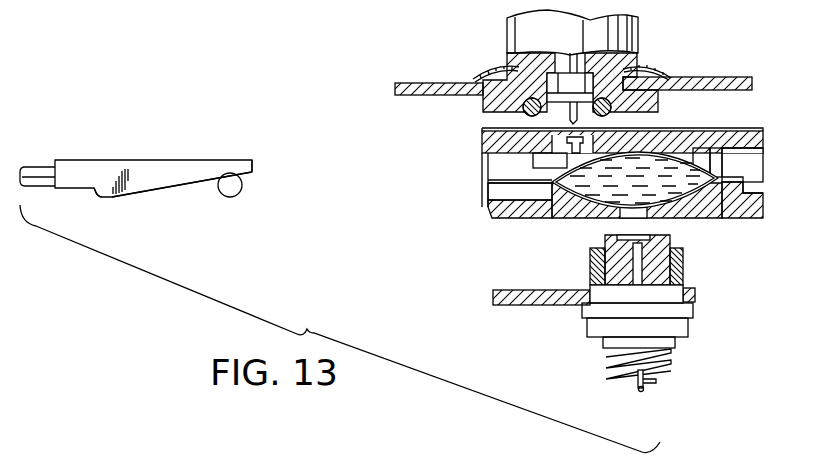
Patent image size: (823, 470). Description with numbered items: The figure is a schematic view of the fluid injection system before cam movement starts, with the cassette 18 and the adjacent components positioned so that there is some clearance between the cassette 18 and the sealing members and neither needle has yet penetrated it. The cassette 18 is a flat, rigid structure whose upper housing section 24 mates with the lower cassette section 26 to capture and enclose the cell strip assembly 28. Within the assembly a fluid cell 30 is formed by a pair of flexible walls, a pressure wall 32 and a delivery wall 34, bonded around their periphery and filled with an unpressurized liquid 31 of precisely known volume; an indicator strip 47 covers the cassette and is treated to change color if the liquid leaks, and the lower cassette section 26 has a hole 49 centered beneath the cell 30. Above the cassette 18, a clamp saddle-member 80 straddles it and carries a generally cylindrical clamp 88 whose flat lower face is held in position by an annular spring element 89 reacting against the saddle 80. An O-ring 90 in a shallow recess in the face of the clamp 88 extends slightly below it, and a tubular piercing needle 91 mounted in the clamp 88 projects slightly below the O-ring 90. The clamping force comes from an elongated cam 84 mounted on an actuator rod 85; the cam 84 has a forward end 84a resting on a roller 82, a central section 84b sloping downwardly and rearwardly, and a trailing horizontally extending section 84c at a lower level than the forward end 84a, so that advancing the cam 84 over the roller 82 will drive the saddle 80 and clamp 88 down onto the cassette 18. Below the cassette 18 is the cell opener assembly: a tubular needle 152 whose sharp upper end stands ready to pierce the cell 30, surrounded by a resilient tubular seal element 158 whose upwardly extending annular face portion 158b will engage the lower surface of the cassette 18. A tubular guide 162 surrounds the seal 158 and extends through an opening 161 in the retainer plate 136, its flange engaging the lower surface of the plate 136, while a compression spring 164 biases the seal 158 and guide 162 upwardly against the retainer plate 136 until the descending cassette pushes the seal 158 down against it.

The cassette 18 is at (750, 143).
The upper housing section 24 is at (482, 150).
The lower cassette section 26 is at (498, 215).
The cell strip assembly 28 is at (488, 197).
The fluid cell 30 is at (560, 222).
The liquid 31 is at (555, 178).
The pressure wall 32 is at (697, 157).
The delivery wall 34 is at (710, 210).
The indicator strip 47 is at (752, 127).
The hole 49 is at (627, 212).
The clamp saddle-member 80 is at (413, 87).
The roller 82 is at (230, 197).
The elongated cam 84 is at (185, 152).
The forward end 84a is at (252, 175).
The central section 84b is at (134, 195).
The trailing horizontally extending section 84c is at (73, 192).
The actuator rod 85 is at (38, 170).
The clamp 88 is at (507, 33).
The annular spring element 89 is at (650, 70).
The O-ring 90 is at (518, 113).
The tubular piercing needle 91 is at (570, 80).
The retainer plate 136 is at (492, 300).
The tubular needle 152 is at (637, 388).
The resilient tubular seal element 158 is at (641, 266).
The annular face portion 158b is at (672, 237).
The opening 161 is at (600, 300).
The tubular guide 162 is at (683, 270).
The compression spring 164 is at (670, 358).